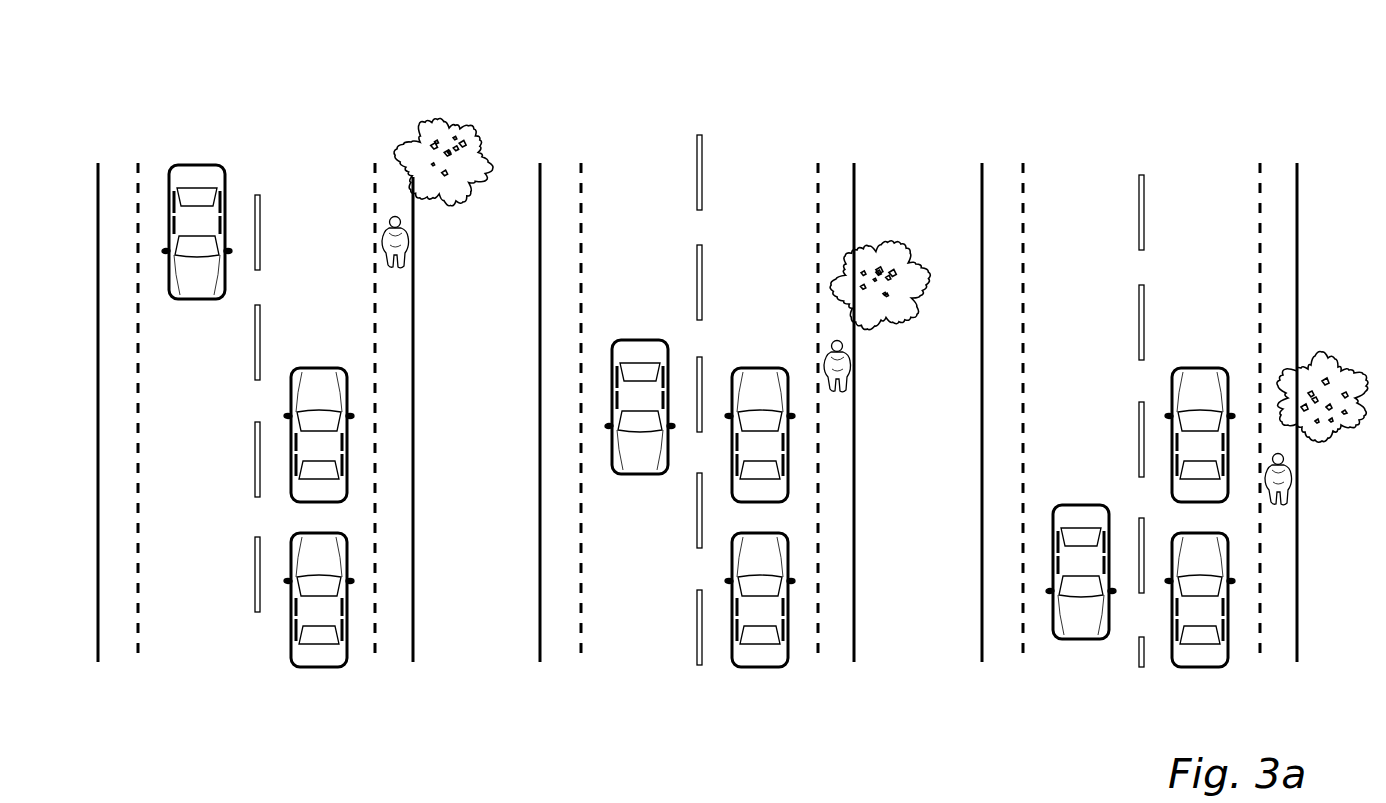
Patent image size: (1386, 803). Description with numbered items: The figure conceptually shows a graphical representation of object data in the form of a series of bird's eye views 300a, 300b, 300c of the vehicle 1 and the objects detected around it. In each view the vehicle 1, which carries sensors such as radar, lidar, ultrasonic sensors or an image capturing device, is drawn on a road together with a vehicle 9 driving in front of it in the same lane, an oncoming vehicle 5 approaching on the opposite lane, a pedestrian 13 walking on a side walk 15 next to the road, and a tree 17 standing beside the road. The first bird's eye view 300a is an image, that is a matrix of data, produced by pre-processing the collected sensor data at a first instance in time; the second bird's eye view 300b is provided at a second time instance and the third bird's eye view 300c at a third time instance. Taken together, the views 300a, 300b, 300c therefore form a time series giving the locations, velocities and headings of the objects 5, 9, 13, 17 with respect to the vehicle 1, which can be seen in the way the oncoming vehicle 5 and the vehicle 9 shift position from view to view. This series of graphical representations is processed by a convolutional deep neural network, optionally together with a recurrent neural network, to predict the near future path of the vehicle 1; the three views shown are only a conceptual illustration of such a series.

The vehicle 1 is at (318, 668).
The oncoming vehicle in opposite lane 5 is at (196, 300).
The vehicle driving in front 9 is at (318, 368).
The pedestrian 13 is at (412, 233).
The side walk 15 is at (390, 207).
The tree 17 is at (460, 130).
The first bird's eye view representation 300a is at (163, 140).
The second bird's eye view representation 300b is at (601, 140).
The third bird's eye view representation 300c is at (1035, 140).